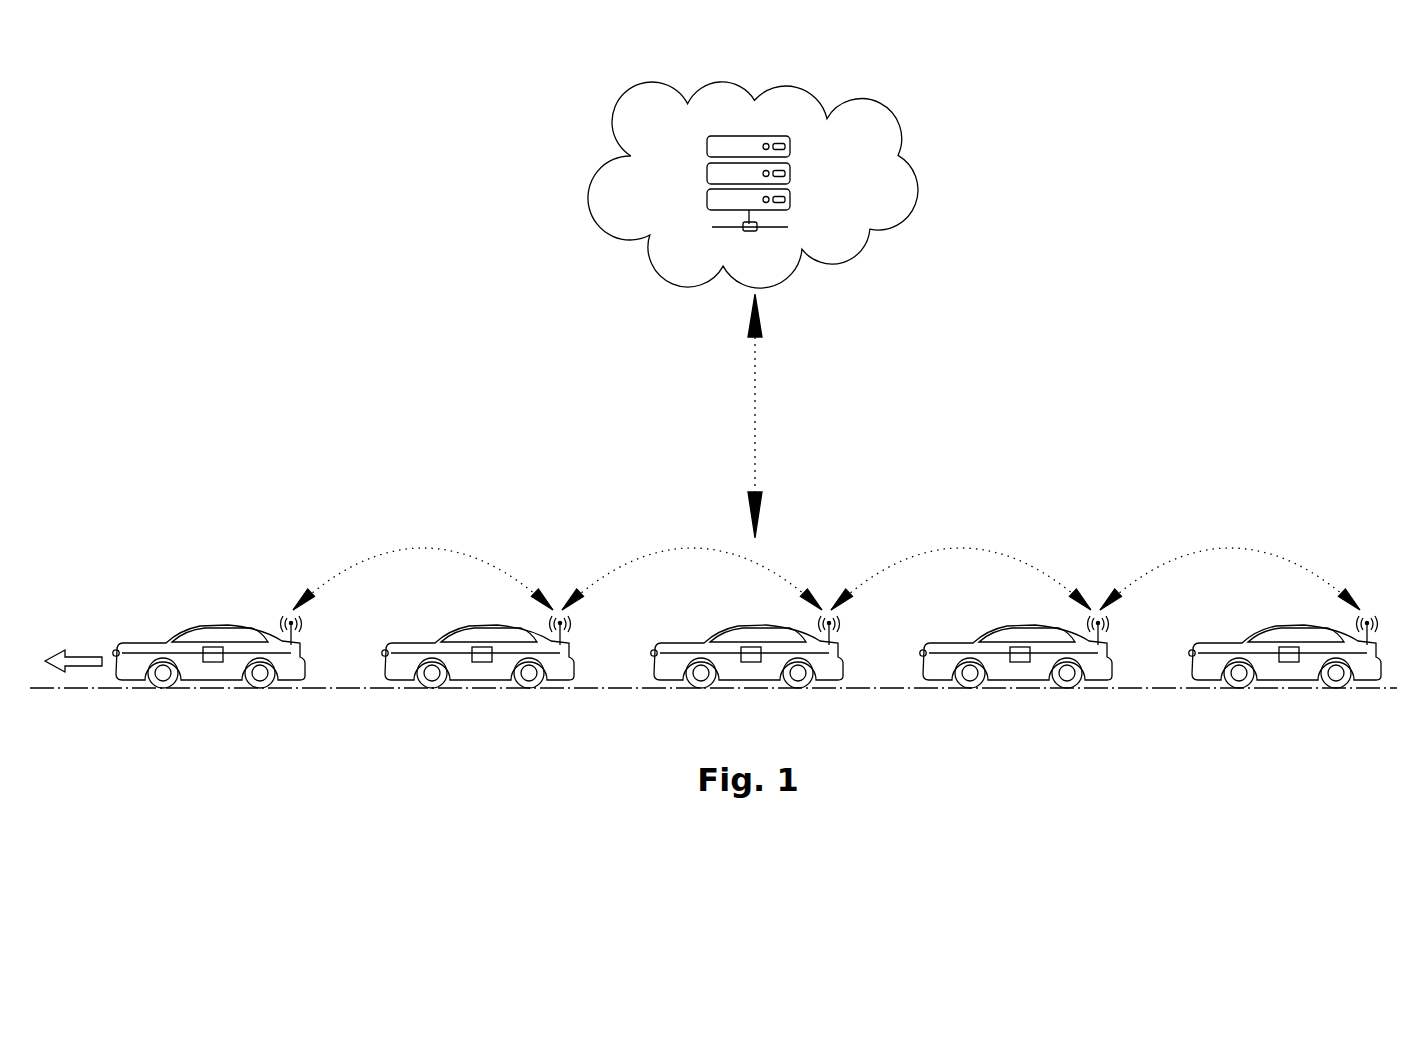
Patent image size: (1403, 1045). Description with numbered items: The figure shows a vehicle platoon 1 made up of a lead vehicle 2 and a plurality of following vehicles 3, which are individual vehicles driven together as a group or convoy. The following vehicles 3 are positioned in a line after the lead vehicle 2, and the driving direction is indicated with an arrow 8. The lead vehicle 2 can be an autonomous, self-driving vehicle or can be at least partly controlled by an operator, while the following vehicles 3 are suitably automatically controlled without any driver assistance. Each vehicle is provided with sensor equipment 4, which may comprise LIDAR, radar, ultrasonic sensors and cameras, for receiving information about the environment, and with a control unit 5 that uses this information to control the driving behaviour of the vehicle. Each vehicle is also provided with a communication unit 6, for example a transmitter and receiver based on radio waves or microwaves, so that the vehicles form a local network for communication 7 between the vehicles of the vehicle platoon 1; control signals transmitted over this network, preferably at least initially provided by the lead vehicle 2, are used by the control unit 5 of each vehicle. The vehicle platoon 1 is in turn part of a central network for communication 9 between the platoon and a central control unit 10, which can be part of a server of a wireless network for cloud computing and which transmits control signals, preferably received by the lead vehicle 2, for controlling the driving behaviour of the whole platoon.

The vehicle platoon 1 is at (905, 389).
The lead vehicle 2 is at (193, 667).
The following vehicles 3 is at (462, 667).
The sensor equipment 4 is at (114, 656).
The control unit 5 is at (210, 663).
The communication unit 6 is at (299, 644).
The local network for communication 7 is at (424, 548).
The arrow 8 is at (85, 663).
The central network for communication 9 is at (755, 416).
The central control unit 10 is at (706, 173).